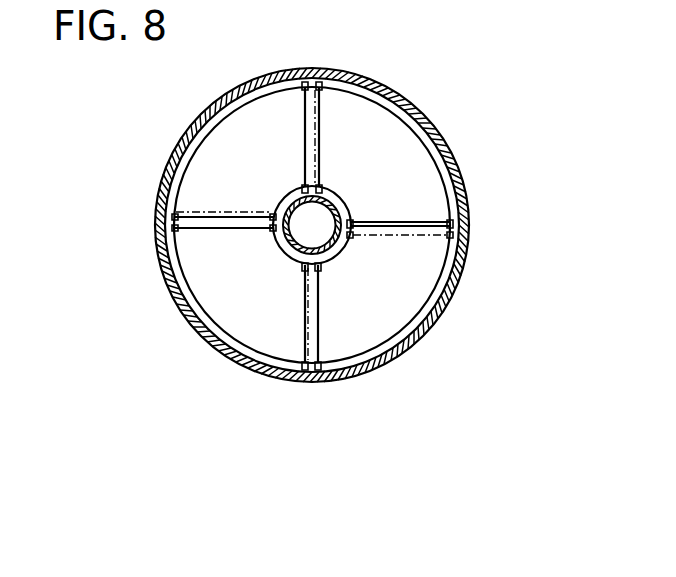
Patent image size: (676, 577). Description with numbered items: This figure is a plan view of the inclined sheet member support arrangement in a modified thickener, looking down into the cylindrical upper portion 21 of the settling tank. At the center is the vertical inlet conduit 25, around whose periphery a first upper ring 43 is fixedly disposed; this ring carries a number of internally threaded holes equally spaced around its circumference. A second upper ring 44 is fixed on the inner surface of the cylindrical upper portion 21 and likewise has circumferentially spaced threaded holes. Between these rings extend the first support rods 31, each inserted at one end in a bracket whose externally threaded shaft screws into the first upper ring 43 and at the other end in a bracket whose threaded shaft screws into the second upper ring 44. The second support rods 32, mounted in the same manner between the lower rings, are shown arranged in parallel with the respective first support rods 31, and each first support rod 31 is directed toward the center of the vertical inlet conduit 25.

The cylindrical upper portion 21 is at (462, 280).
The second upper ring 44 is at (187, 133).
The first upper ring 43 is at (283, 257).
The vertical inlet conduit 25 is at (336, 210).
The first support rods 31 is at (320, 339).
The second support rods 32 is at (305, 338).